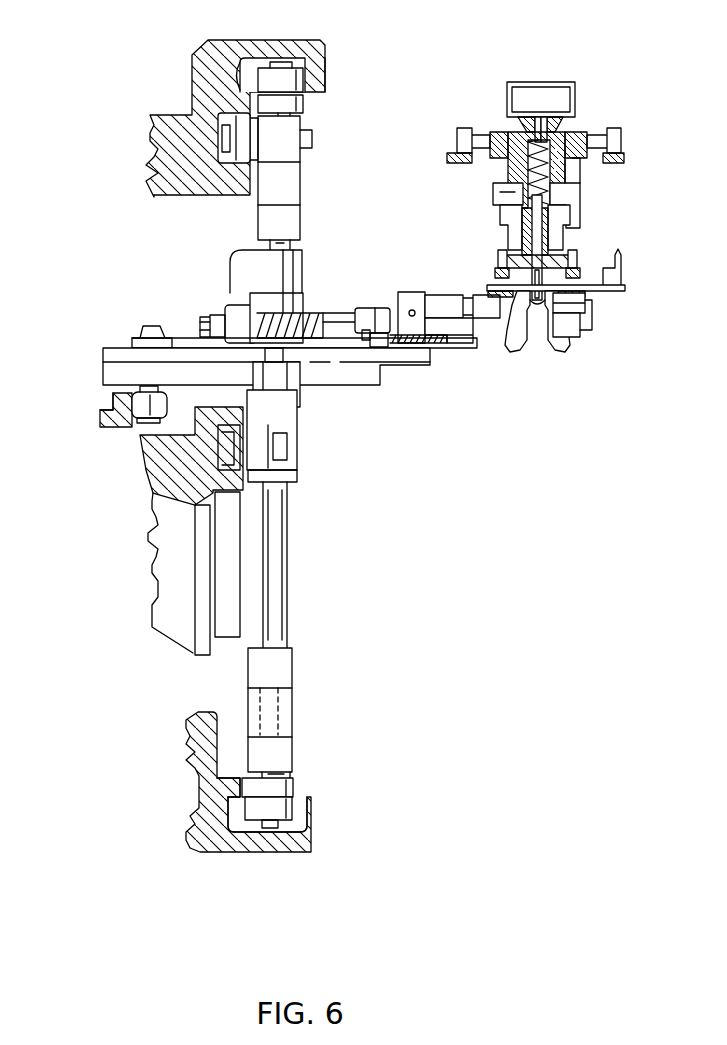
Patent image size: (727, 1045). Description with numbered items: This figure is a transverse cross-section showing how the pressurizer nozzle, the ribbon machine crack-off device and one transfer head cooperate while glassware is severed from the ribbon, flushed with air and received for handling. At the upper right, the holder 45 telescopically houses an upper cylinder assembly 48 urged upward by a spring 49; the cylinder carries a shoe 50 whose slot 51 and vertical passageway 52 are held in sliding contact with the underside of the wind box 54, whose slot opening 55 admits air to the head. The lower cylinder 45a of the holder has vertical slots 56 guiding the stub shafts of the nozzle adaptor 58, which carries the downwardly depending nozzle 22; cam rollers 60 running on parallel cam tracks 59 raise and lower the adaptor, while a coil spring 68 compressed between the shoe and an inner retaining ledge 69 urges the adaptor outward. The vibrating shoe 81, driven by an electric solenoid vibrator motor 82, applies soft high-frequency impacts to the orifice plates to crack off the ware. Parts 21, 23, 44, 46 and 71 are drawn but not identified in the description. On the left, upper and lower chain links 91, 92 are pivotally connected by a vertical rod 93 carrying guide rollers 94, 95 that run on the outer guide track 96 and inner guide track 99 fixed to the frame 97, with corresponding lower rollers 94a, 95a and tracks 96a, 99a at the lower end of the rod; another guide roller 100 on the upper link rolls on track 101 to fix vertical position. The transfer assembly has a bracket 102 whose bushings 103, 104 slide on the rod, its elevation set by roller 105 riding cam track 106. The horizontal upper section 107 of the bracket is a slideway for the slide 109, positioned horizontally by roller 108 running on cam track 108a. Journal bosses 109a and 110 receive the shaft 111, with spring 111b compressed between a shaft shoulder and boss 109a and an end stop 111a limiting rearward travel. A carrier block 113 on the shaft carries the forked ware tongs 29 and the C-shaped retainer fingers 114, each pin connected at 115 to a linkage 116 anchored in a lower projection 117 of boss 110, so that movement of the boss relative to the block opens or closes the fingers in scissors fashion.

The valve assembly 21 is at (500, 200).
The nozzle 22 is at (558, 340).
The fork member 23 is at (520, 342).
The ware tongs 29 is at (592, 330).
The bolt 44 is at (482, 140).
The holder 45 is at (568, 172).
The lower cylinder 45a is at (518, 238).
The bolt 46 is at (621, 148).
The upper cylinder assembly 48 is at (522, 125).
The spring 49 is at (568, 190).
The shoe 50 is at (536, 122).
The slot 51 is at (543, 122).
The vertical passageway 52 is at (548, 122).
The wind box 54 is at (577, 96).
The slot opening 55 is at (545, 97).
The vertical slots 56 is at (510, 228).
The nozzle adaptor 58 is at (562, 236).
The cam tracks 59 is at (522, 286).
The cam rollers 60 is at (578, 262).
The coil spring 68 is at (530, 165).
The inner retaining ledge 69 is at (524, 192).
The retainer 71 is at (572, 214).
The vibrating shoe 81 is at (600, 293).
The electric solenoid vibrator motor 82 is at (613, 286).
The upper chain link 91 is at (302, 218).
The lower chain link 92 is at (293, 740).
The vertical rod 93 is at (278, 562).
The guide roller 94 is at (303, 79).
The lower guide roller 94a is at (290, 806).
The lower guide roller 95 is at (304, 102).
The lower guide roller 95a is at (286, 790).
The outer guide track 96 is at (326, 55).
The lower outer guide track 96a is at (306, 812).
The machine frame 97 is at (185, 128).
The inner guide track 99 is at (246, 62).
The lower inner guide track 99a is at (232, 778).
The guide roller 100 is at (236, 142).
The track 101 is at (255, 168).
The bracket 102 is at (380, 378).
The bushing 103 is at (296, 388).
The bushing 104 is at (300, 266).
The roller 105 is at (240, 452).
The cam track 106 is at (268, 500).
The horizontal upper section 107 is at (430, 347).
The roller 108 is at (150, 406).
The cam track 108a is at (102, 406).
The slide 109 is at (168, 338).
The journal boss 109a is at (231, 324).
The journal boss 110 is at (372, 308).
The shaft 111 is at (343, 320).
The end stop 111a is at (205, 328).
The spring 111b is at (298, 322).
The carrier block 113 is at (410, 294).
The retainer fingers 114 is at (574, 316).
The pin connection 115 is at (462, 335).
The linkage 116 is at (474, 346).
The lower projection 117 is at (382, 348).